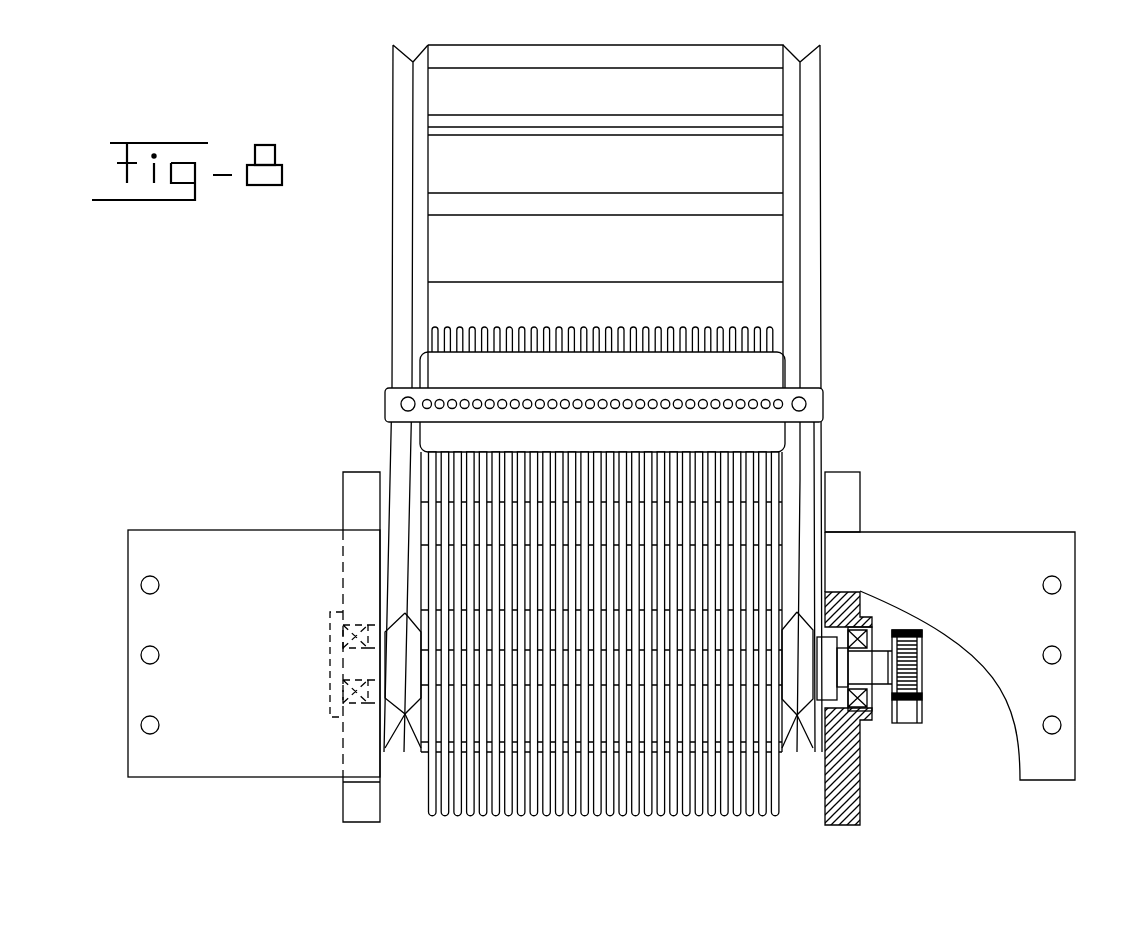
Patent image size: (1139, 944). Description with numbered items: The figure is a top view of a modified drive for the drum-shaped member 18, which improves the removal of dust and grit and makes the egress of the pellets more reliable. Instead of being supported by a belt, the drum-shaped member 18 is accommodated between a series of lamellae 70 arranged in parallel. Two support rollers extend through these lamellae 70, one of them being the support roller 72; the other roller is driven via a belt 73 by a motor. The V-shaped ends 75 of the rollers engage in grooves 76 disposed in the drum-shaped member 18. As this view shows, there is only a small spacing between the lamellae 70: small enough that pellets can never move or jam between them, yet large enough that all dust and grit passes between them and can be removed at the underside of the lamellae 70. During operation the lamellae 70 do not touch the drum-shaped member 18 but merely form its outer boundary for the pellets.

The drum-shaped member 18 is at (836, 145).
The lamellae 70 is at (518, 822).
The support roller 72 is at (388, 642).
The belt 73 is at (900, 632).
The V-shaped ends 75 is at (386, 706).
The grooves 76 is at (402, 257).